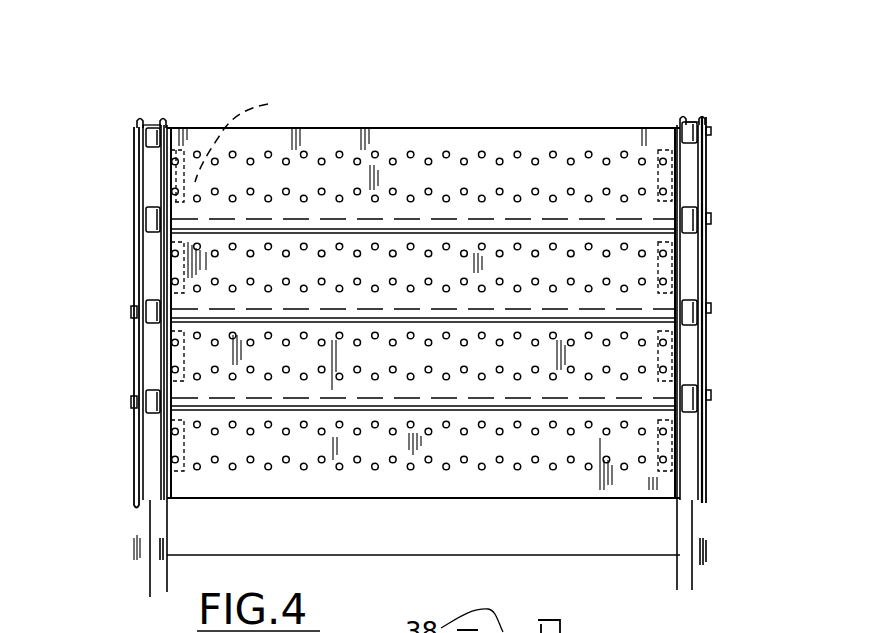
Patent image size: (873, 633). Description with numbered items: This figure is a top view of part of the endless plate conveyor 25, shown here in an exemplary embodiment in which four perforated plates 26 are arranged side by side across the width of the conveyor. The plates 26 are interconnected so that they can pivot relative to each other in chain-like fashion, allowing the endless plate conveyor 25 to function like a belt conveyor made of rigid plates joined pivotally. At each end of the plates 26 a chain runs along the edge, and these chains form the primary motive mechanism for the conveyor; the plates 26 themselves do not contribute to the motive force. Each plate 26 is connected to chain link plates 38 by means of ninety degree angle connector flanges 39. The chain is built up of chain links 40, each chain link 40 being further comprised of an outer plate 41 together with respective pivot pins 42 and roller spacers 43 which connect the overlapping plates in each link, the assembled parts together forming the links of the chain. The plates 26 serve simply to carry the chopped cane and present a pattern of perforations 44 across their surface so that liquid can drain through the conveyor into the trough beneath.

The endless plate conveyor 25 is at (641, 78).
The perforated plates 26 is at (636, 183).
The chain link plates 38 is at (170, 145).
The 90 degree angle connector flanges 39 is at (257, 105).
The chain link 40 is at (131, 201).
The outer plate 41 is at (137, 157).
The pivot pins 42 is at (138, 130).
The roller spacers 43 is at (155, 125).
The perforations 44 is at (435, 190).